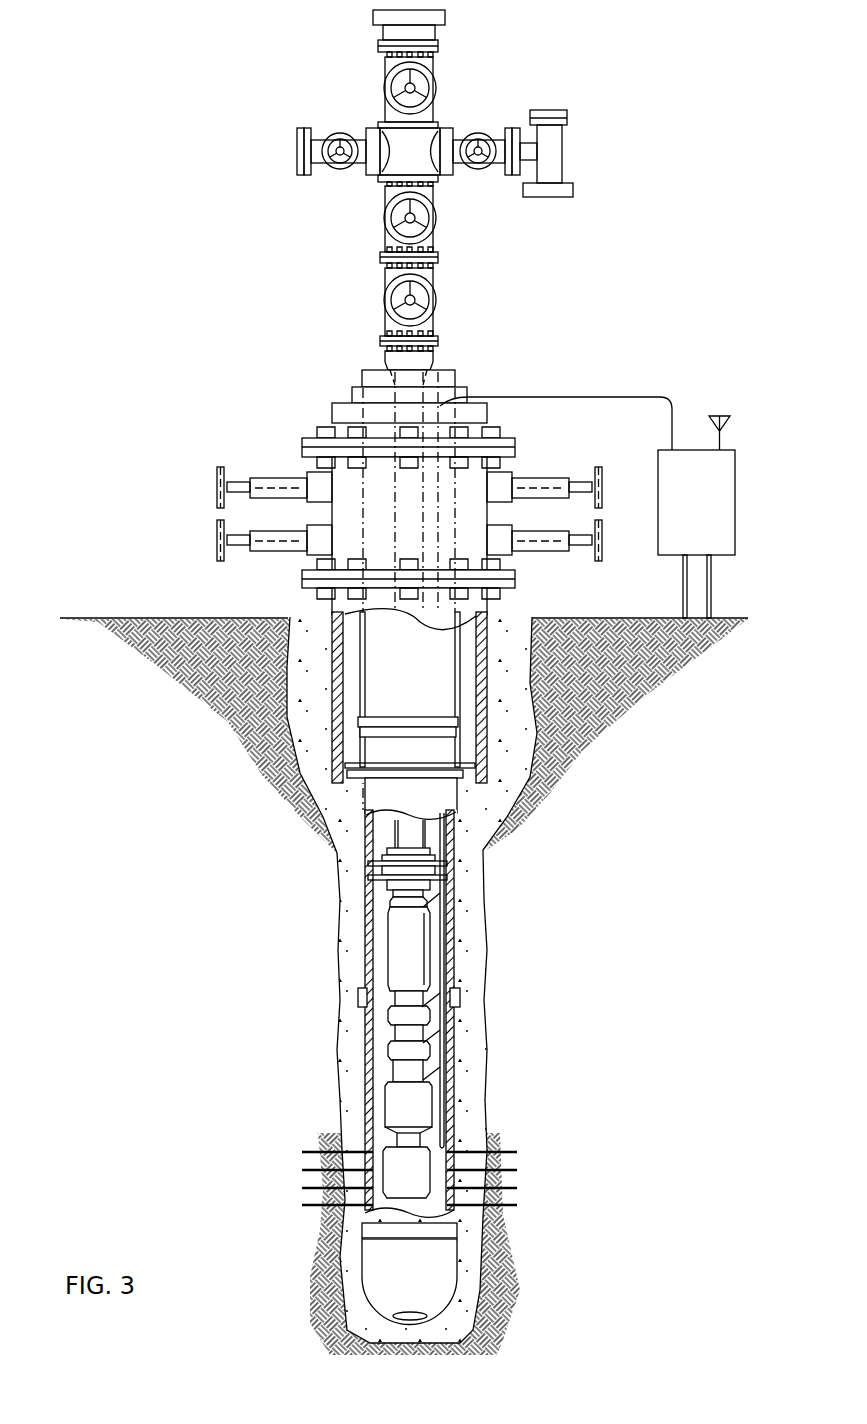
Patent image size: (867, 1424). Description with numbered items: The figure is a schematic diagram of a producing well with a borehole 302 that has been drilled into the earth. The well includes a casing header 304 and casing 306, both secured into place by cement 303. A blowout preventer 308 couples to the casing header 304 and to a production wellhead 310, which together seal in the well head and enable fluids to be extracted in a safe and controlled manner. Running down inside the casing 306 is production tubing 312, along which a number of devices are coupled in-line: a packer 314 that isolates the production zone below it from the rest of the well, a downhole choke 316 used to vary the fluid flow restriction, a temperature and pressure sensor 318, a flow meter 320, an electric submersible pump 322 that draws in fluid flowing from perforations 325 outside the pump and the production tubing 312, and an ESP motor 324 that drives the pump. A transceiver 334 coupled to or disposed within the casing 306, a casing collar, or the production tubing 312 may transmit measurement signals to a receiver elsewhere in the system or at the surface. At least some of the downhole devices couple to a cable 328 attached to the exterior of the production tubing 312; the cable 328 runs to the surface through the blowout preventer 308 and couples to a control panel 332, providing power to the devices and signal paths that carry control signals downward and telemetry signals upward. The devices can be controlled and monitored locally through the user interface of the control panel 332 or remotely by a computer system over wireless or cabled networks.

The borehole 302 is at (280, 735).
The cement 303 is at (345, 935).
The casing header 304 is at (537, 756).
The casing 306 is at (457, 895).
The blowout preventer 308 is at (311, 413).
The production wellhead 310 is at (368, 119).
The production tubing 312 is at (377, 836).
The packer 314 is at (373, 903).
The downhole choke 316 is at (395, 967).
The temperature and pressure sensor 318 is at (388, 1012).
The flow meter 320 is at (388, 1047).
The electric submersible pump 322 is at (345, 1100).
The ESP motor 324 is at (417, 1173).
The perforations 325 is at (292, 1148).
The cable 328 is at (565, 393).
The control panel 332 is at (718, 516).
The transceiver 334 is at (460, 993).